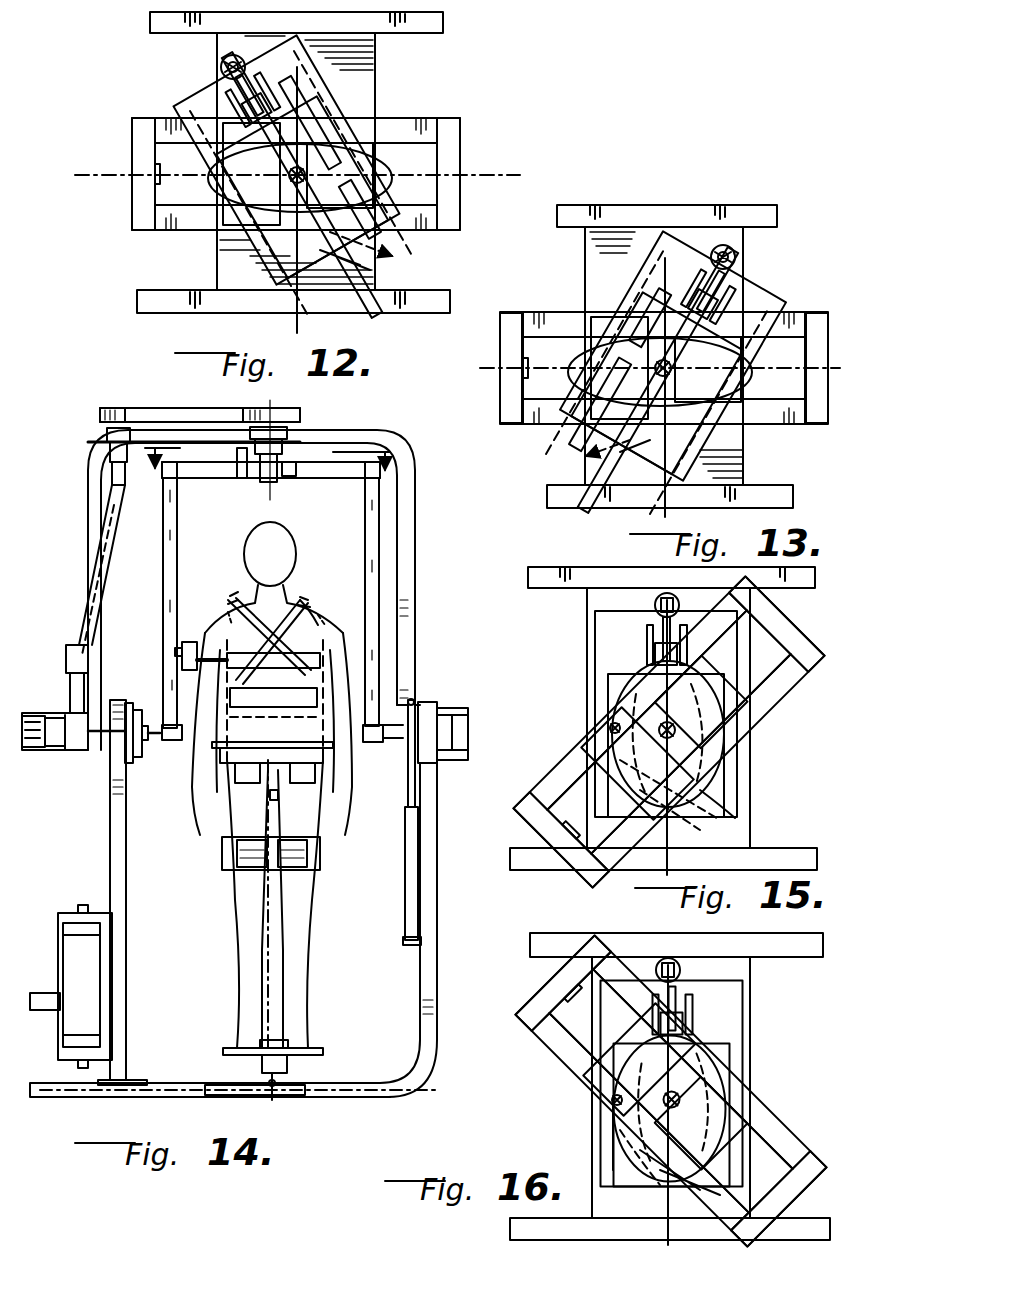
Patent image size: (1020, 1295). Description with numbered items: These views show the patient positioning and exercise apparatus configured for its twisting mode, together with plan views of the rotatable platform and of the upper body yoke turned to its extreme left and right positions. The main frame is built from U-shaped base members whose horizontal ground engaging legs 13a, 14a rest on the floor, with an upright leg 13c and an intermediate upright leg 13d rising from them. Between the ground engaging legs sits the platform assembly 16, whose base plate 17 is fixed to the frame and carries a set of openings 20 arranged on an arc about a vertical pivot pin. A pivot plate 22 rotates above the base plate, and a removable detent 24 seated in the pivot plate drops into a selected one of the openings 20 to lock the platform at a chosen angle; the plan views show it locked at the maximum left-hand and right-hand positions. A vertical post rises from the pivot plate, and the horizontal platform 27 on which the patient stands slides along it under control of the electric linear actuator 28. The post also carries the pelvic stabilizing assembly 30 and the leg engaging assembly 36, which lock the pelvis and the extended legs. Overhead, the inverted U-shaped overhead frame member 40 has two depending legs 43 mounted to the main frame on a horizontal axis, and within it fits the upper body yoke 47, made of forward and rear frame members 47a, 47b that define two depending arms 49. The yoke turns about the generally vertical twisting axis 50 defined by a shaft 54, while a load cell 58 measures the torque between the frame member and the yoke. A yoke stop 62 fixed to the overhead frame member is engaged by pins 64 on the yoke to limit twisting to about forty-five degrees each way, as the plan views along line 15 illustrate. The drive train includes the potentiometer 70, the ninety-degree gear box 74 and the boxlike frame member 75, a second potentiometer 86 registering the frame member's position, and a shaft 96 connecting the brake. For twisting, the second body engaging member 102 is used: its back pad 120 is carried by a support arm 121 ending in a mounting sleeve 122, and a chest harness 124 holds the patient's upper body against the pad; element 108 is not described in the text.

In FIG. 12, the horizontal ground engaging leg 13a is at (152, 313).
In FIG. 13, the horizontal ground engaging leg 13a is at (578, 508).
In FIG. 15, the horizontal ground engaging leg 13a is at (790, 848).
In FIG. 16, the horizontal ground engaging leg 13a is at (522, 1225).
In FIG. 14, the upright leg 13c is at (422, 1003).
In FIG. 14, the intermediate upright leg 13d is at (112, 845).
In FIG. 12, the horizontal ground engaging leg 14a is at (163, 33).
In FIG. 13, the horizontal ground engaging leg 14a is at (682, 205).
In FIG. 15, the horizontal ground engaging leg 14a is at (568, 588).
In FIG. 16, the horizontal ground engaging leg 14a is at (598, 933).
In FIG. 14, the section line 15 is at (272, 447).
In FIG. 14, the platform assembly 16 is at (258, 1063).
In FIG. 12, the base plate 17 is at (378, 273).
In FIG. 13, the base plate 17 is at (583, 272).
In FIG. 15, the base plate 17 is at (588, 668).
In FIG. 16, the base plate 17 is at (752, 970).
In FIG. 12, the openings 20 is at (368, 251).
In FIG. 13, the openings 20 is at (600, 453).
In FIG. 15, the openings 20 is at (737, 820).
In FIG. 16, the openings 20 is at (622, 1190).
In FIG. 12, the pivot plate 22 is at (330, 80).
In FIG. 13, the pivot plate 22 is at (648, 268).
In FIG. 15, the pivot plate 22 is at (595, 641).
In FIG. 16, the pivot plate 22 is at (745, 1020).
In FIG. 12, the removable detent 24 is at (276, 262).
In FIG. 13, the removable detent 24 is at (660, 468).
In FIG. 15, the removable detent 24 is at (700, 820).
In FIG. 16, the removable detent 24 is at (655, 1192).
In FIG. 12, the horizontal platform 27 is at (238, 262).
In FIG. 13, the horizontal platform 27 is at (690, 445).
In FIG. 15, the horizontal platform 27 is at (733, 772).
In FIG. 16, the horizontal platform 27 is at (612, 1146).
In FIG. 14, the horizontal platform 27 is at (235, 1045).
In FIG. 12, the electric linear actuator 28 is at (221, 70).
In FIG. 13, the electric linear actuator 28 is at (737, 258).
In FIG. 15, the electric linear actuator 28 is at (655, 605).
In FIG. 16, the electric linear actuator 28 is at (681, 970).
In FIG. 14, the pelvic stabilizing assembly 30 is at (236, 760).
In FIG. 14, the leg engaging assembly 36 is at (222, 870).
In FIG. 14, the overhead frame member 40 is at (86, 528).
In FIG. 14, the depending legs 43 is at (416, 580).
In FIG. 12, the upper body yoke 47 is at (128, 219).
In FIG. 13, the upper body yoke 47 is at (496, 352).
In FIG. 15, the upper body yoke 47 is at (790, 690).
In FIG. 16, the upper body yoke 47 is at (545, 1060).
In FIG. 14, the upper body yoke 47 is at (160, 606).
In FIG. 12, the forward frame member 47a is at (200, 232).
In FIG. 13, the forward frame member 47a is at (553, 425).
In FIG. 15, the forward frame member 47a is at (772, 705).
In FIG. 16, the forward frame member 47a is at (560, 1080).
In FIG. 12, the rear frame member 47b is at (410, 118).
In FIG. 13, the rear frame member 47b is at (568, 313).
In FIG. 15, the rear frame member 47b is at (560, 765).
In FIG. 16, the rear frame member 47b is at (770, 1130).
In FIG. 14, the depending arms 49 is at (162, 566).
In FIG. 14, the twisting axis 50 is at (268, 488).
In FIG. 12, the shaft 54 is at (305, 176).
In FIG. 13, the shaft 54 is at (658, 373).
In FIG. 15, the shaft 54 is at (660, 722).
In FIG. 14, the load cell 58 is at (292, 480).
In FIG. 15, the yoke stop 62 is at (610, 728).
In FIG. 16, the yoke stop 62 is at (612, 1100).
In FIG. 15, the pins 64 is at (600, 720).
In FIG. 16, the pins 64 is at (675, 1038).
In FIG. 14, the potentiometer 70 is at (80, 640).
In FIG. 14, the gear box 74 is at (62, 712).
In FIG. 14, the boxlike frame member 75 is at (108, 757).
In FIG. 14, the potentiometer 86 is at (108, 782).
In FIG. 14, the shaft 96 is at (455, 763).
In FIG. 14, the second body engaging member 102 is at (240, 600).
In FIG. 14, the arm rod 108 is at (185, 660).
In FIG. 14, the back pad 120 is at (322, 617).
In FIG. 14, the support arm 121 is at (228, 616).
In FIG. 14, the mounting sleeve 122 is at (183, 668).
In FIG. 14, the chest harness 124 is at (330, 582).